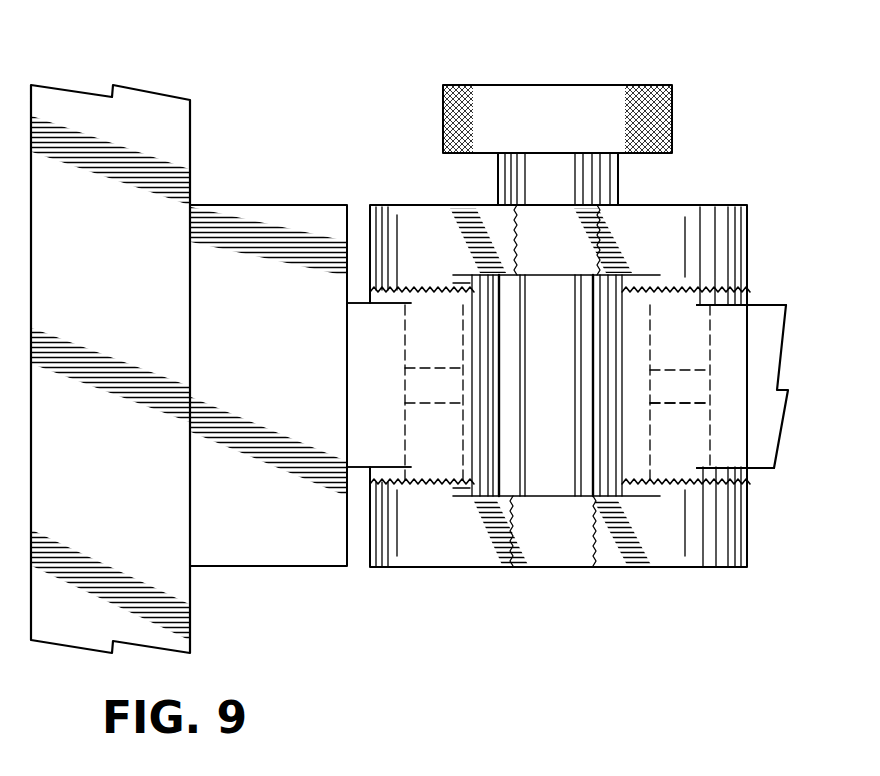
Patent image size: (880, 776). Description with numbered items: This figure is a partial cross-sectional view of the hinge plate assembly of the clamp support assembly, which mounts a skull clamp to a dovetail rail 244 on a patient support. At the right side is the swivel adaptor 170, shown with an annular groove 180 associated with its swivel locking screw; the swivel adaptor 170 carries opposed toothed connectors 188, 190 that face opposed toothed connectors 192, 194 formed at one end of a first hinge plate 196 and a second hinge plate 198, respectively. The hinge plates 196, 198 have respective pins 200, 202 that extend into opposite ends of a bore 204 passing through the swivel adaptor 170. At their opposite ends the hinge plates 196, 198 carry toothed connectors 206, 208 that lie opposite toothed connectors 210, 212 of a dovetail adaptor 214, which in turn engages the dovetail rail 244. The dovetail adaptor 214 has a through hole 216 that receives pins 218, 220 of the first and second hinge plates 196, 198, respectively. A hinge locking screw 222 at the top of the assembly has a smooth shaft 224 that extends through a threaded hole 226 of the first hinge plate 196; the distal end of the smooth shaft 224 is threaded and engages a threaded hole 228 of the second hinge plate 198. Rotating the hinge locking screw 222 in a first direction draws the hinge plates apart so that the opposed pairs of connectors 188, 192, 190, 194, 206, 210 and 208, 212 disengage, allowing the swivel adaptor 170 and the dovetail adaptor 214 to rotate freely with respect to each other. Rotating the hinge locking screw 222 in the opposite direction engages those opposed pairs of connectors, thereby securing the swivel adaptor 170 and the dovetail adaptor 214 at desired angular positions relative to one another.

The swivel adaptor 170 is at (772, 322).
The annular groove 180 is at (763, 21).
The toothed connector 188 is at (732, 300).
The toothed connector 190 is at (734, 472).
The toothed connector 192 is at (730, 306).
The toothed connector 194 is at (731, 468).
The first hinge plate 196 is at (673, 256).
The second hinge plate 198 is at (473, 554).
The pin 200 is at (710, 360).
The pin 202 is at (710, 410).
The bore 204 is at (650, 387).
The toothed connector 206 is at (442, 294).
The toothed connector 208 is at (440, 482).
The toothed connector 210 is at (432, 290).
The toothed connector 212 is at (416, 483).
The dovetail adaptor 214 is at (259, 204).
The through hole 216 is at (463, 388).
The pin 218 is at (405, 354).
The pin 220 is at (405, 410).
The hinge locking screw 222 is at (673, 85).
The smooth shaft 224 is at (562, 447).
The threaded hole 226 is at (520, 256).
The threaded hole 228 is at (520, 538).
The dovetail rail 244 is at (122, 303).